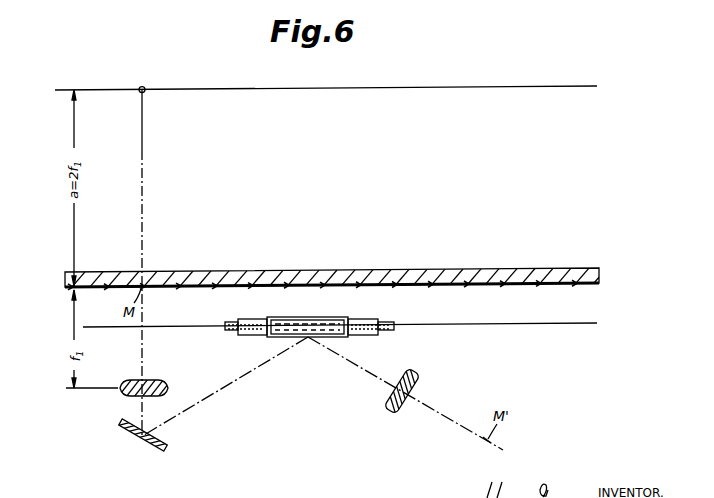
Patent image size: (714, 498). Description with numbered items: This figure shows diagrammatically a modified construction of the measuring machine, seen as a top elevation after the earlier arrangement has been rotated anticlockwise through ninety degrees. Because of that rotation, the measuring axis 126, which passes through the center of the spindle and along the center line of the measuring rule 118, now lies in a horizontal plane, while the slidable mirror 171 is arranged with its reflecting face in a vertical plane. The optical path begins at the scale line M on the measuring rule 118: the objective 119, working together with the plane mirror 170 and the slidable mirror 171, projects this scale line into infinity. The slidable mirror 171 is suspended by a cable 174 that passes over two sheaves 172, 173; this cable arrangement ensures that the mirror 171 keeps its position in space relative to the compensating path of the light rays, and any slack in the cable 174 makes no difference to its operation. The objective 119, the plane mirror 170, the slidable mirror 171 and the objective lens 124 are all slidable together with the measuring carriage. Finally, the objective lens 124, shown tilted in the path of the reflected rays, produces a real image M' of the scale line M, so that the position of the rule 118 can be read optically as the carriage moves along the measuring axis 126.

The measuring axis 126 is at (382, 88).
The measuring rule 118 is at (370, 278).
The cable 174 is at (530, 326).
The slidable mirror 171 is at (333, 338).
The sheave 172 is at (226, 322).
The sheave 173 is at (388, 322).
The objective 119 is at (156, 381).
The plane mirror 170 is at (164, 451).
The objective lens 124 is at (400, 410).